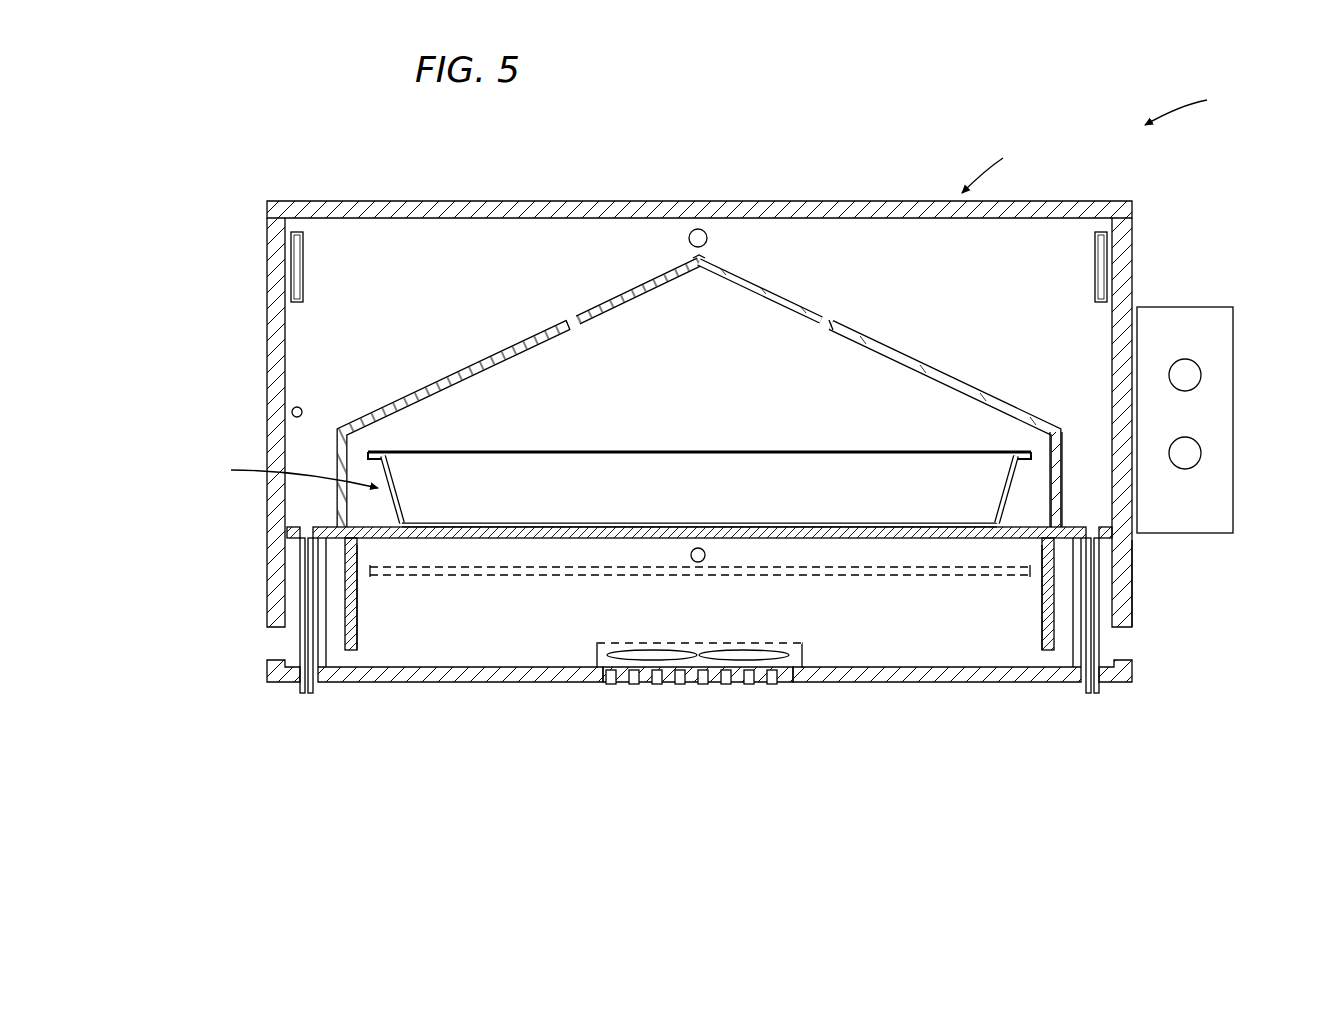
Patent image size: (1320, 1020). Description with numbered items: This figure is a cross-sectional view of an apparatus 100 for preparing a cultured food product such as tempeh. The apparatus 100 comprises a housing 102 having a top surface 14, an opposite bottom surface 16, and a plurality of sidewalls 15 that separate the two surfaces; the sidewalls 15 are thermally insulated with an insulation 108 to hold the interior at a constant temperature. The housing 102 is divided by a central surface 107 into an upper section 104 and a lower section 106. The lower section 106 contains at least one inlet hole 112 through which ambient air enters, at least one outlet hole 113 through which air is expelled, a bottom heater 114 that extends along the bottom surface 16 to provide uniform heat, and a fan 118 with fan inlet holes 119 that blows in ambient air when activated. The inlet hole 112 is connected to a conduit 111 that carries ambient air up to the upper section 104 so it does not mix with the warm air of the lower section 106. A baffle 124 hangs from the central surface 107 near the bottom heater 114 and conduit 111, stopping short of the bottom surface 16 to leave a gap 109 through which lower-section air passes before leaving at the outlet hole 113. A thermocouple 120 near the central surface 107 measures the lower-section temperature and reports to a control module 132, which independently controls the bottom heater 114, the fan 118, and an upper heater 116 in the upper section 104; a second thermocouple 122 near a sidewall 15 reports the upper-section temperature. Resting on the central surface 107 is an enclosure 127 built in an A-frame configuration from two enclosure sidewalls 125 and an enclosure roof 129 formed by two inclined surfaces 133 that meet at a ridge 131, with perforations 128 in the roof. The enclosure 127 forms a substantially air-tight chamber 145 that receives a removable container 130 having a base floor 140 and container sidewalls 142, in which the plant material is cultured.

The apparatus 100 is at (1194, 102).
The housing 102 is at (1000, 166).
The upper section 104 is at (1133, 218).
The lower section 106 is at (1133, 580).
The central surface 107 is at (375, 540).
The insulation 108 is at (330, 203).
The gap 109 is at (357, 662).
The conduit 111 is at (311, 693).
The inlet hole 112 is at (303, 693).
The outlet hole 113 is at (698, 229).
The bottom heater 114 is at (878, 575).
The upper heater 116 is at (296, 268).
The fan 118 is at (597, 660).
The fan inlet hole 119 is at (720, 686).
The thermocouple 120 is at (696, 562).
The thermocouple 122 is at (292, 411).
The baffle 124 is at (358, 598).
The enclosure sidewall 125 is at (1057, 498).
The enclosure 127 is at (768, 290).
The perforation 128 is at (568, 318).
The enclosure roof 129 is at (635, 282).
The container 130 is at (282, 473).
The ridge 131 is at (698, 265).
The control module 132 is at (1235, 346).
The inclined surface 133 is at (515, 355).
The base floor 140 is at (633, 523).
The container sidewall 142 is at (1010, 470).
The chamber 145 is at (693, 410).
The top surface 14 is at (500, 203).
The sidewall 15 is at (275, 330).
The bottom surface 16 is at (845, 684).